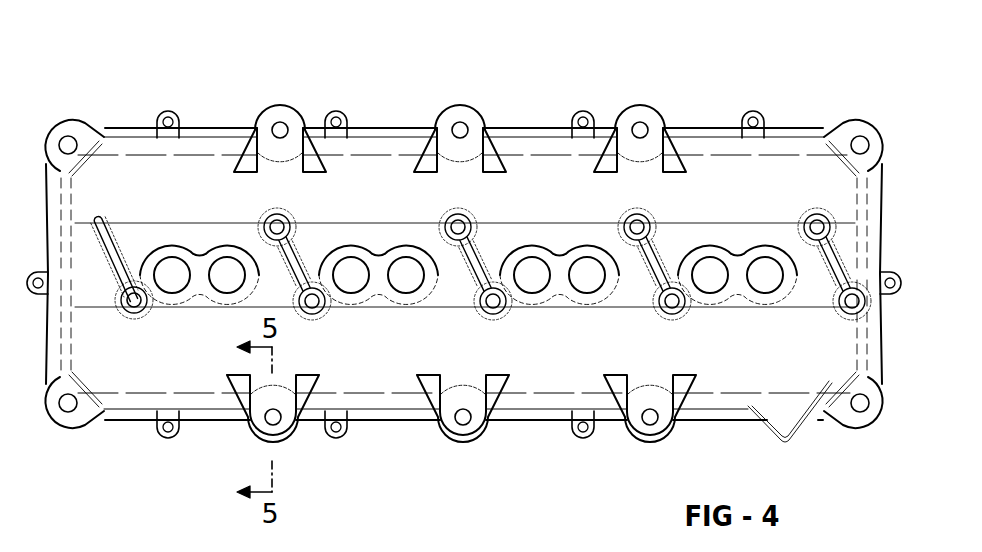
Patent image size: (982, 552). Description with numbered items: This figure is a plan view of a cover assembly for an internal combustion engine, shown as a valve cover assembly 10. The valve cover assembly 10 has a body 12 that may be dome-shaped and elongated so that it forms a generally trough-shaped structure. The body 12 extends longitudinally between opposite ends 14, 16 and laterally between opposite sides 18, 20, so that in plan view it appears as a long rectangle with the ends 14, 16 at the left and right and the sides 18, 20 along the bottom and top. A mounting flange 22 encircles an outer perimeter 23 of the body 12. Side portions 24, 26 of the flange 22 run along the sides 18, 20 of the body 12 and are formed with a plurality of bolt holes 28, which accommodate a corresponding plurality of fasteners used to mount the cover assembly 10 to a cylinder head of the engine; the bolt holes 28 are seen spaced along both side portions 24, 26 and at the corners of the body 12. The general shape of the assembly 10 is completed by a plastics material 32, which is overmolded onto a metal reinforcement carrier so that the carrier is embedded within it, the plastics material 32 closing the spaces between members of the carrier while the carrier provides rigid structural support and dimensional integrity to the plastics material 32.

The valve cover assembly 10 is at (560, 46).
The body 12 is at (788, 162).
The end 14 is at (881, 200).
The end 16 is at (47, 222).
The side 18 is at (520, 421).
The side 20 is at (380, 127).
The mounting flange 22 is at (699, 134).
The outer perimeter 23 is at (123, 421).
The side portion 24 is at (550, 421).
The side portion 26 is at (522, 128).
The bolt holes 28 is at (68, 142).
The plastics material 32 is at (193, 178).